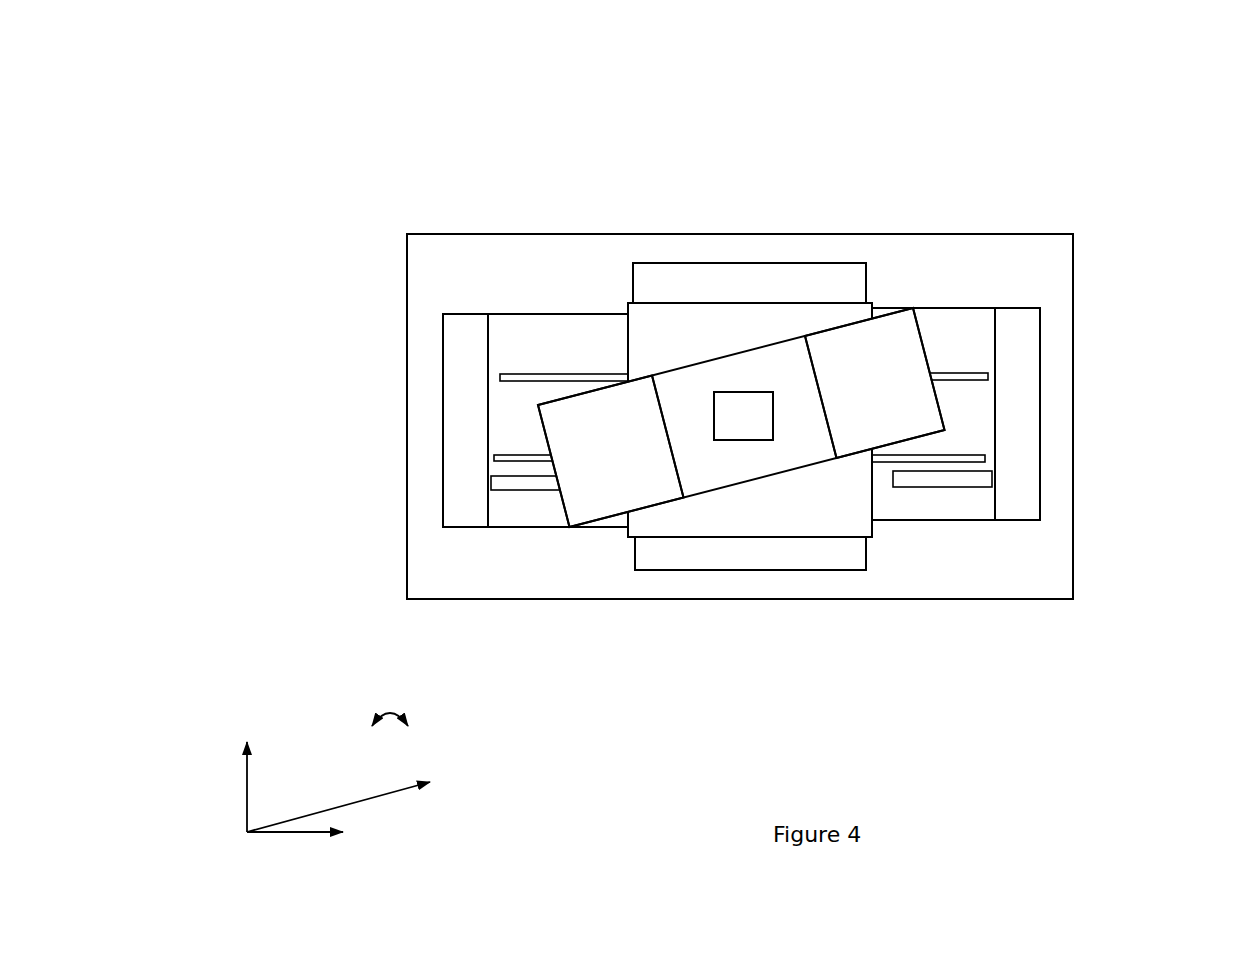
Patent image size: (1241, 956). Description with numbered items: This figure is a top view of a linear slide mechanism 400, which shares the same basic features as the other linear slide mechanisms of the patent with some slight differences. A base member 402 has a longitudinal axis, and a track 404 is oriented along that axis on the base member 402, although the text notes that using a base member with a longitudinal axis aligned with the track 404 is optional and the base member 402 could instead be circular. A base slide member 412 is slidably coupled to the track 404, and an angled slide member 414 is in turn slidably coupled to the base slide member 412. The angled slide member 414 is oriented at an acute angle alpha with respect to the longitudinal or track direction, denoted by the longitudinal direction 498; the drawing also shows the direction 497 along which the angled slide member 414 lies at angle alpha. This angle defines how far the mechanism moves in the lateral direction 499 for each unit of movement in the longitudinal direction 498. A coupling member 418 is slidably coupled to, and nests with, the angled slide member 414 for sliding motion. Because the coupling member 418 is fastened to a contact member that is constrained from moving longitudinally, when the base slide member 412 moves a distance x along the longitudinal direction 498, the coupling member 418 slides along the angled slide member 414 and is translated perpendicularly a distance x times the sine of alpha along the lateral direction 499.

The linear slide mechanism 400 is at (263, 100).
The base member 402 is at (1078, 558).
The track 404 is at (982, 332).
The base slide member 412 is at (844, 518).
The angled slide member 414 is at (922, 415).
The coupling member 418 is at (693, 463).
The rotation direction at angle alpha 497 is at (743, 418).
The longitudinal direction 498 is at (389, 828).
The lateral direction 499 is at (251, 750).